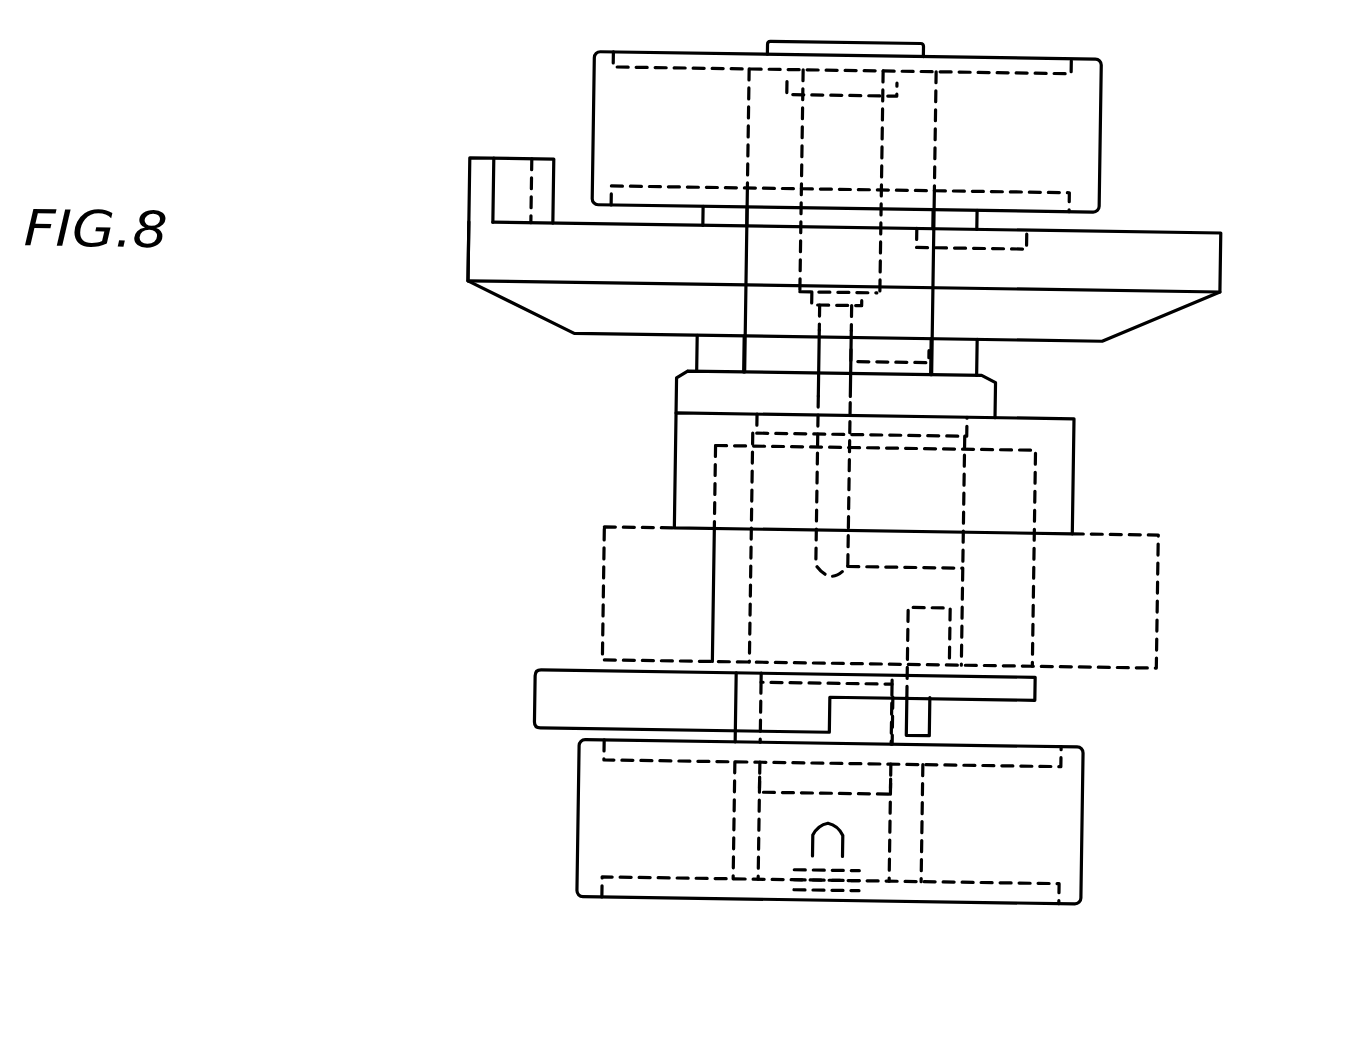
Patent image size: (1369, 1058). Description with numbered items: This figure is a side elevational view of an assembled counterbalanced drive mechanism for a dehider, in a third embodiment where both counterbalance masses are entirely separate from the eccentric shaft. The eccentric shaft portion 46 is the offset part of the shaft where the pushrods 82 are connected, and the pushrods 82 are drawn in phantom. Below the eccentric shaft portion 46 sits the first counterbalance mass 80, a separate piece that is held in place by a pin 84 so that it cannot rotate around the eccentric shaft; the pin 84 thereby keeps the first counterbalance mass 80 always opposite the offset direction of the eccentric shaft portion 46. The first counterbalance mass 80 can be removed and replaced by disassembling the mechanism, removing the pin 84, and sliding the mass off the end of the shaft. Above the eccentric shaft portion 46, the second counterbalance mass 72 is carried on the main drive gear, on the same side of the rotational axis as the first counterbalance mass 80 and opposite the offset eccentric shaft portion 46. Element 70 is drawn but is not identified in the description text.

The mounting plate 70 is at (1123, 302).
The second counterbalance mass 72 is at (513, 159).
The eccentric shaft portion 46 is at (1019, 562).
The pushrods 82 is at (1123, 588).
The pin 84 is at (935, 625).
The first counterbalance mass 80 is at (566, 694).